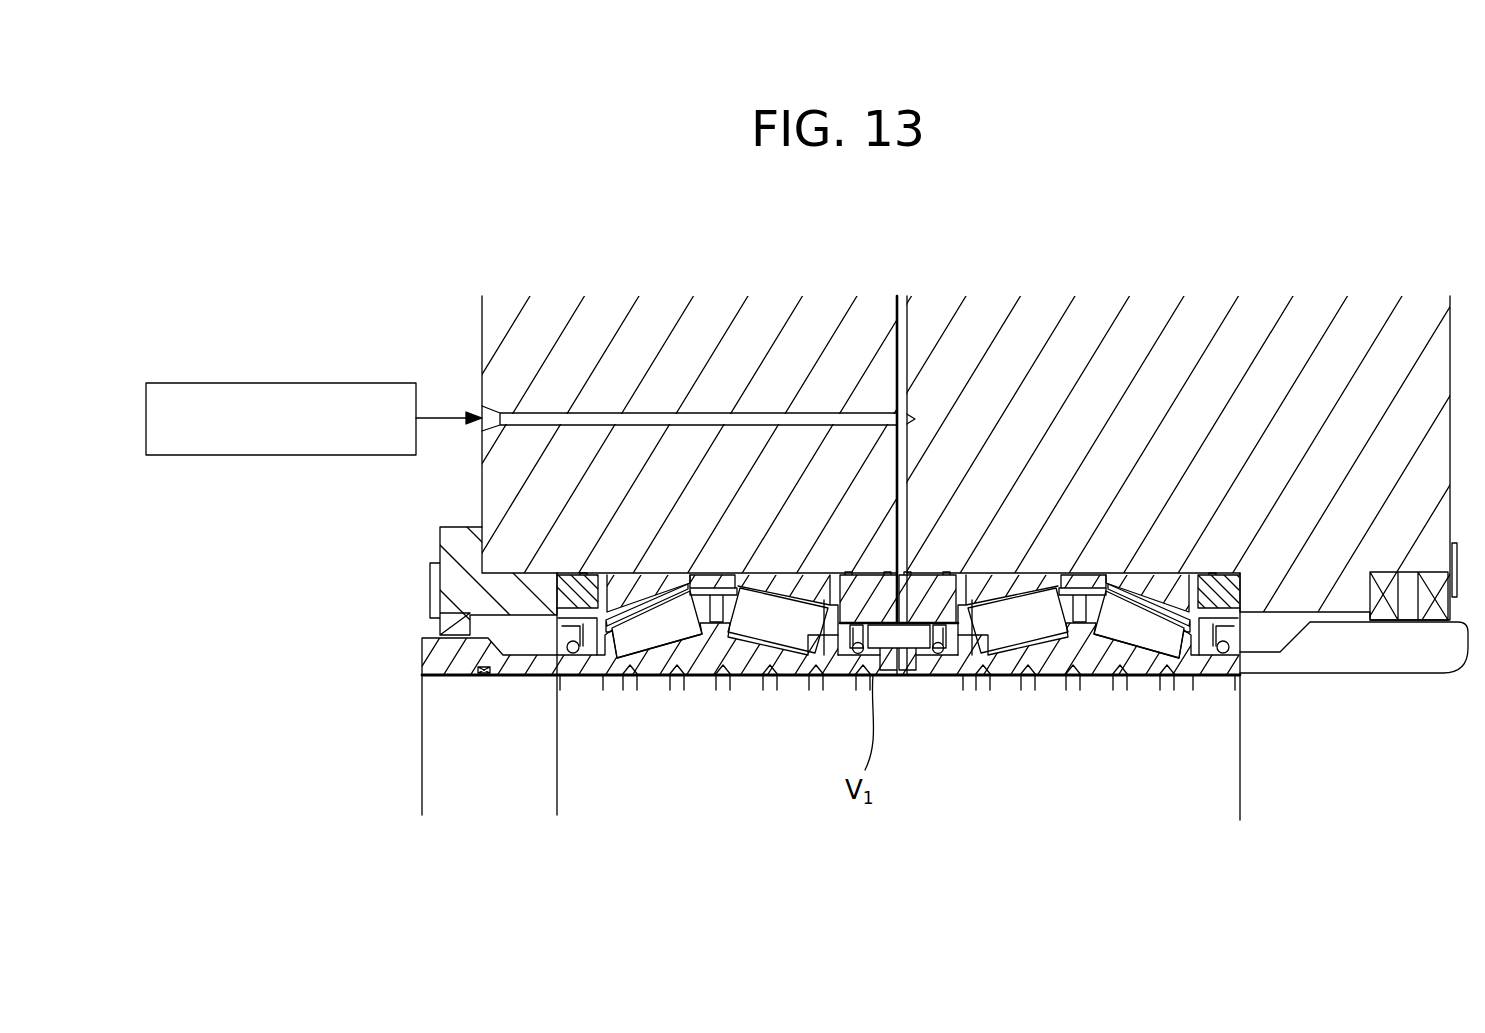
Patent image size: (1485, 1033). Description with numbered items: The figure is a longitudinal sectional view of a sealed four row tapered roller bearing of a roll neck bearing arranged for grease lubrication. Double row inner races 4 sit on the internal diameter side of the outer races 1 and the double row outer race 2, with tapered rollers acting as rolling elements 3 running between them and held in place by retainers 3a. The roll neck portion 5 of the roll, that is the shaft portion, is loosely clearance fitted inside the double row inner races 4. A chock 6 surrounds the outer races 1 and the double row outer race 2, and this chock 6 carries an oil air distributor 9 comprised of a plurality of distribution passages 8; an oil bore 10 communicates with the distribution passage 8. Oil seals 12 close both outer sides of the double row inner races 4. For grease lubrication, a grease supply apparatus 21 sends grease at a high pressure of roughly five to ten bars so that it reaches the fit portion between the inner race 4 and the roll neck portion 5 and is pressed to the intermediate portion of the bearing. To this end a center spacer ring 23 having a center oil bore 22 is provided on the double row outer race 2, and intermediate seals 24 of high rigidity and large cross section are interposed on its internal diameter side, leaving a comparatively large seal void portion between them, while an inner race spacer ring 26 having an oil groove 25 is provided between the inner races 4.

The outer race 1 is at (632, 590).
The double row outer race 2 is at (780, 583).
The rolling element 3 is at (785, 635).
The retainer 3a is at (638, 630).
The double row inner race 4 is at (1050, 660).
The roll neck portion 5 is at (1098, 683).
The chock 6 is at (505, 483).
The distribution passage 8 is at (910, 468).
The oil air distributor 9 is at (601, 316).
The oil bore 10 is at (713, 578).
The oil seal 12 is at (585, 645).
The grease supply apparatus 21 is at (296, 384).
The center oil bore 22 is at (885, 575).
The center spacer ring 23 is at (933, 580).
The intermediate seal 24 is at (858, 665).
The oil groove 25 is at (898, 660).
The inner race spacer ring 26 is at (915, 665).